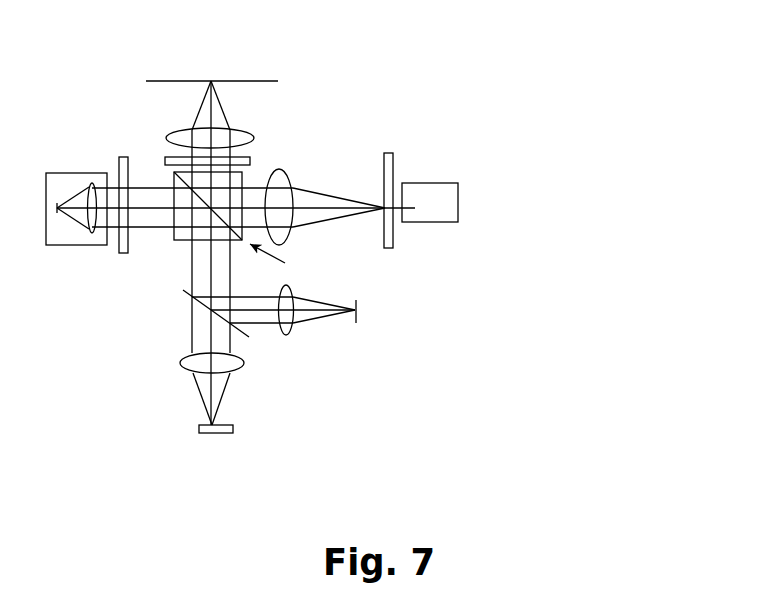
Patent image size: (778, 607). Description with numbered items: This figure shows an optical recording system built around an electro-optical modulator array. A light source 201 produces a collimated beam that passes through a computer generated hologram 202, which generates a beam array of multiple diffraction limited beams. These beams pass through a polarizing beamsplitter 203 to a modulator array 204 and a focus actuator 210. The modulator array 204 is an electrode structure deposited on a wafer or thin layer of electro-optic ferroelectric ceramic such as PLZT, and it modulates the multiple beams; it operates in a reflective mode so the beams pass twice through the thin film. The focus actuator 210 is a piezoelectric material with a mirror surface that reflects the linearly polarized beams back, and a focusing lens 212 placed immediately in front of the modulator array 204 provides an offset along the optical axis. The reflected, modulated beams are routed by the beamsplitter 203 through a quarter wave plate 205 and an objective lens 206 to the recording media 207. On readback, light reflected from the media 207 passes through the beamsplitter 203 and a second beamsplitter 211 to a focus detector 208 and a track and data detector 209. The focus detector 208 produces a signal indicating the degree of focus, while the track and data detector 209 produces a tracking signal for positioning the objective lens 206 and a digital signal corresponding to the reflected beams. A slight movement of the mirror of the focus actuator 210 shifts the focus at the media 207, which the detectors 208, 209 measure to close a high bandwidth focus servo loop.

The light source 201 is at (45, 172).
The computer generated hologram 202 is at (120, 155).
The beamsplitter 203 is at (172, 243).
The modulator array 204 is at (397, 243).
The quarter wave plate 205 is at (255, 157).
The objective lens 206 is at (256, 133).
The recording media 207 is at (283, 43).
The focus detector 208 is at (361, 314).
The track and data detector 209 is at (262, 448).
The focus actuator 210 is at (434, 183).
The second beamsplitter 211 is at (251, 336).
The focusing lens 212 is at (299, 238).